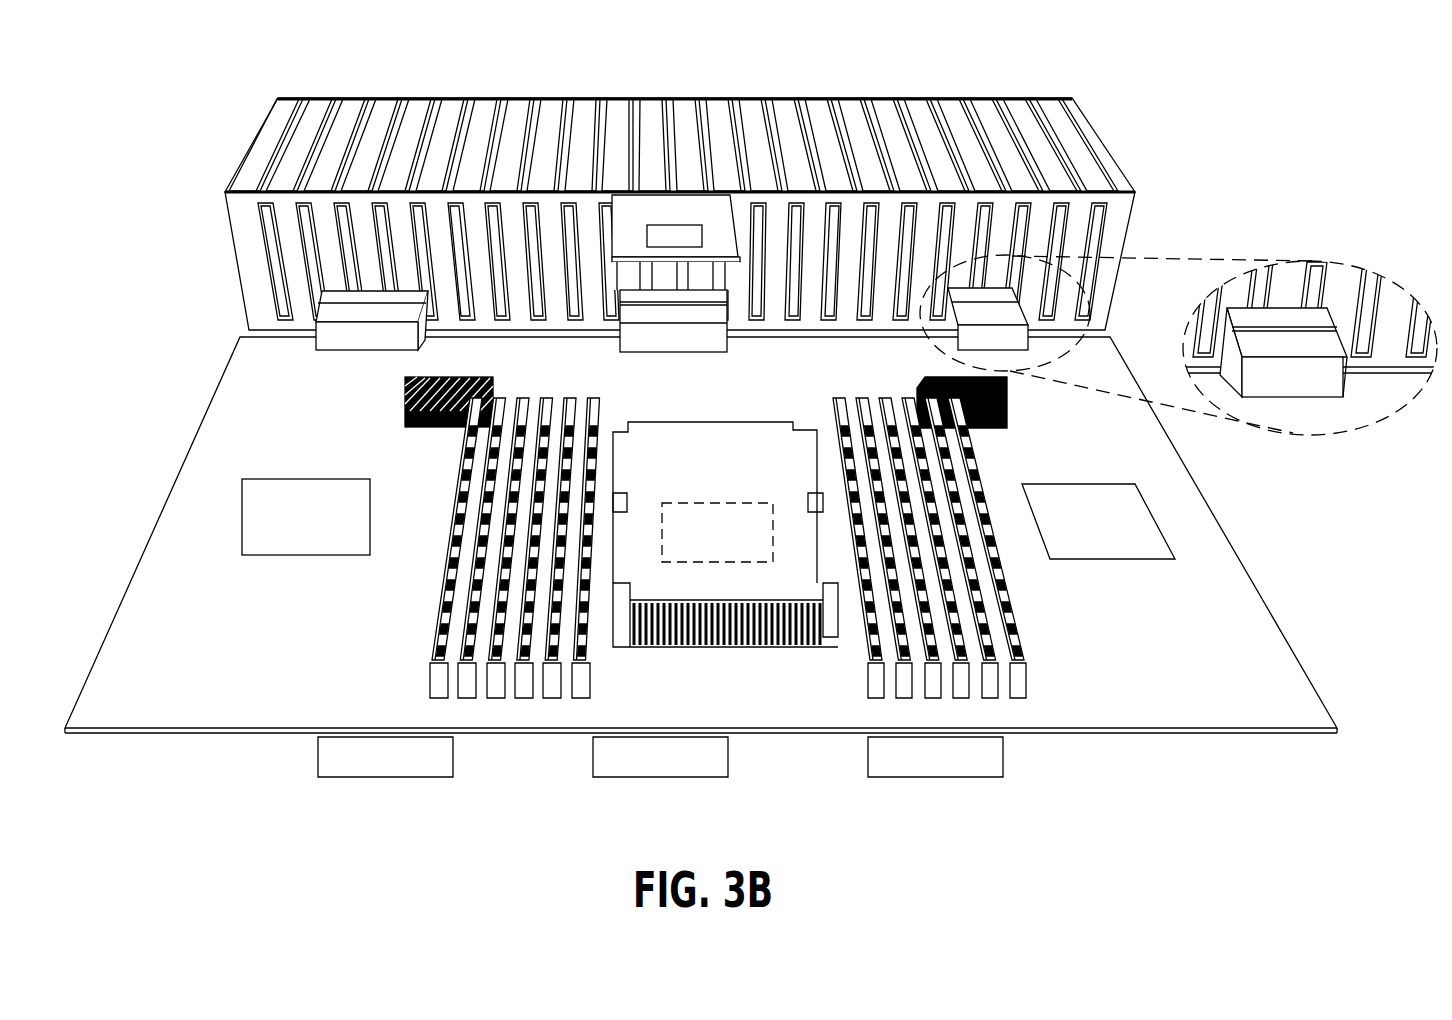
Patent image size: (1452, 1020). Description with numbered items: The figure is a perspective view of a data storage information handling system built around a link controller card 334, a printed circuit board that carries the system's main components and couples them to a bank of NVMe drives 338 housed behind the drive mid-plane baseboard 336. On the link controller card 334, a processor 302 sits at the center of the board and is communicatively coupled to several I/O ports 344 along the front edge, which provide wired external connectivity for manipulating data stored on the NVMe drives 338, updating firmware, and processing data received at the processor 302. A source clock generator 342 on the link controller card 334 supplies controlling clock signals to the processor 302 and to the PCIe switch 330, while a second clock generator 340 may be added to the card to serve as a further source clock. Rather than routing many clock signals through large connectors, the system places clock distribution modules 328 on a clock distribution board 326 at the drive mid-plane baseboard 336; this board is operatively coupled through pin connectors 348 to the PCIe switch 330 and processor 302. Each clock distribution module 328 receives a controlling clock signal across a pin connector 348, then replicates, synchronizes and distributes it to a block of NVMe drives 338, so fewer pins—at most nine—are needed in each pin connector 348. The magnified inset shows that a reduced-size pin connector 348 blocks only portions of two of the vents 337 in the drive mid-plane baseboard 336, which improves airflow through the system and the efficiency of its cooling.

The processor 302 is at (706, 520).
The clock distribution board 326 is at (665, 154).
The clock distribution module 328 is at (668, 237).
The PCIe switch 330 is at (406, 394).
The link controller card 334 is at (1295, 688).
The drive mid-plane baseboard 336 is at (1118, 224).
The vents 337 is at (308, 248).
The NVMe drives 338 is at (1077, 90).
The second clock generator 340 is at (1122, 528).
The clock generator 342 is at (253, 518).
The I/O ports 344 is at (383, 767).
The pin connector 348 is at (358, 315).